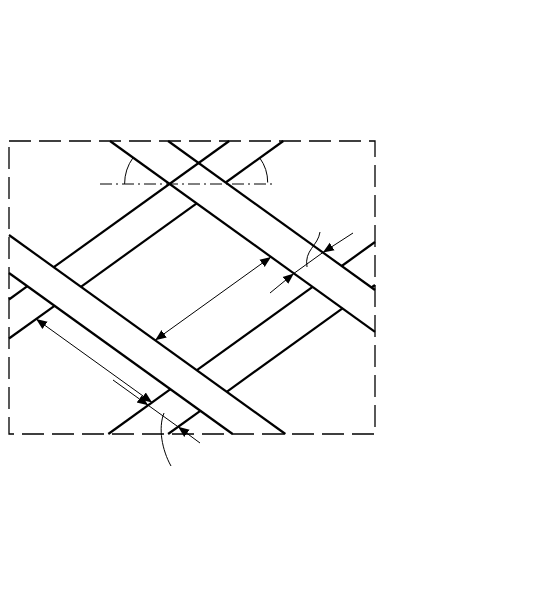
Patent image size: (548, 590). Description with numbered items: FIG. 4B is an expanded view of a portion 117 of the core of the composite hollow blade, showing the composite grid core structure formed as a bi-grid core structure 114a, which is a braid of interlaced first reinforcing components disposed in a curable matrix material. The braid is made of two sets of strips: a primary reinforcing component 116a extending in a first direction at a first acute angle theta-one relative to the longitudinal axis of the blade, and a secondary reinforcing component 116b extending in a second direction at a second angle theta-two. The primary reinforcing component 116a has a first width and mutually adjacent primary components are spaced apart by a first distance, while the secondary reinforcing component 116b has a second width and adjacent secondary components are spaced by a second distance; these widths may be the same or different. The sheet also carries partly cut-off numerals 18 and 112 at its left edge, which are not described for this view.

The bi-grid core structure 114a is at (245, 60).
The portion of the core 117 is at (43, 141).
The secondary reinforcing component 116b is at (182, 141).
The primary reinforcing component 116a is at (217, 141).
The adjacent numeral fragment 18 is at (14, 495).
The adjacent numeral fragment 112 is at (25, 586).